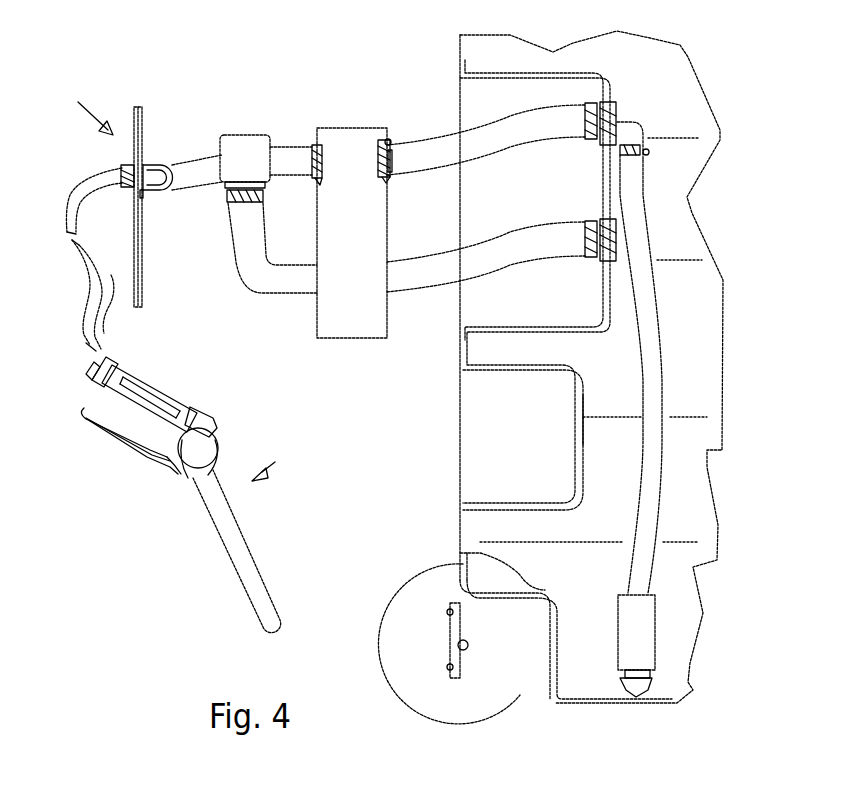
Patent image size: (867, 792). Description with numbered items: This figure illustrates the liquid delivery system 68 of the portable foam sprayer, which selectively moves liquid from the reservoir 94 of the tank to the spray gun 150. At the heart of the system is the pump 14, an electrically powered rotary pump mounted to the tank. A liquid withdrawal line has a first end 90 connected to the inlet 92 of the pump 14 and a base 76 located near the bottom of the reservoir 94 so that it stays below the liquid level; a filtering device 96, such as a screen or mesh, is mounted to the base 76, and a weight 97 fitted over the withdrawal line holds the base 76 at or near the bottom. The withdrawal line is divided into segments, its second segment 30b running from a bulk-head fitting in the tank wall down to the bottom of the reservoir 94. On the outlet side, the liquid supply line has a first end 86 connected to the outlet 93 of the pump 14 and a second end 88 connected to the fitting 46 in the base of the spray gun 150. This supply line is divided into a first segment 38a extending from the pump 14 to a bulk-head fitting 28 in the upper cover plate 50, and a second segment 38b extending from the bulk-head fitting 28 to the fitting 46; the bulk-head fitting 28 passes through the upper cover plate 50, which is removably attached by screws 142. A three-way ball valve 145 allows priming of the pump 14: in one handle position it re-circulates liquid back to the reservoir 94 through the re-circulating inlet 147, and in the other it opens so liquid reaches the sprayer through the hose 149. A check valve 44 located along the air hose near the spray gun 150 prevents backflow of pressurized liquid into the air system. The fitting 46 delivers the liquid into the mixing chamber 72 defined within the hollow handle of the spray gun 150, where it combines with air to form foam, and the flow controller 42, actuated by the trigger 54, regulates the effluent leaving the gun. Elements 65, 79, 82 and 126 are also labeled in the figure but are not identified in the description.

The pump 14 is at (316, 328).
The bulk-head fitting 28 is at (141, 166).
The second segment of liquid withdrawal line 30b is at (668, 360).
The first segment of liquid supply line 38a is at (297, 150).
The second segment of liquid supply line 38b is at (80, 264).
The flow controller 42 is at (180, 470).
The check valve 44 is at (90, 347).
The fitting 46 is at (96, 379).
The upper cover plate 50 is at (141, 112).
The trigger 54 is at (113, 431).
The tube 65 is at (237, 575).
The liquid delivery system 68 is at (82, 107).
The mixing chamber 72 is at (161, 415).
The base of liquid withdrawal line 76 is at (625, 676).
The drain tube 79 is at (632, 128).
The wheel 82 is at (439, 644).
The first end of liquid supply line 86 is at (315, 145).
The second end of liquid supply line 88 is at (97, 367).
The first end of liquid withdrawal line 90 is at (391, 167).
The inlet of pump 92 is at (384, 177).
The outlet of pump 93 is at (322, 170).
The reservoir 94 is at (633, 457).
The filtering device 96 is at (640, 695).
The weight 97 is at (656, 634).
The valve assembly 126 is at (364, 152).
The screws 142 is at (142, 196).
The three-way ball valve 145 is at (247, 140).
The re-circulating inlet 147 is at (610, 236).
The hose 149 is at (238, 280).
The spray gun 150 is at (280, 468).